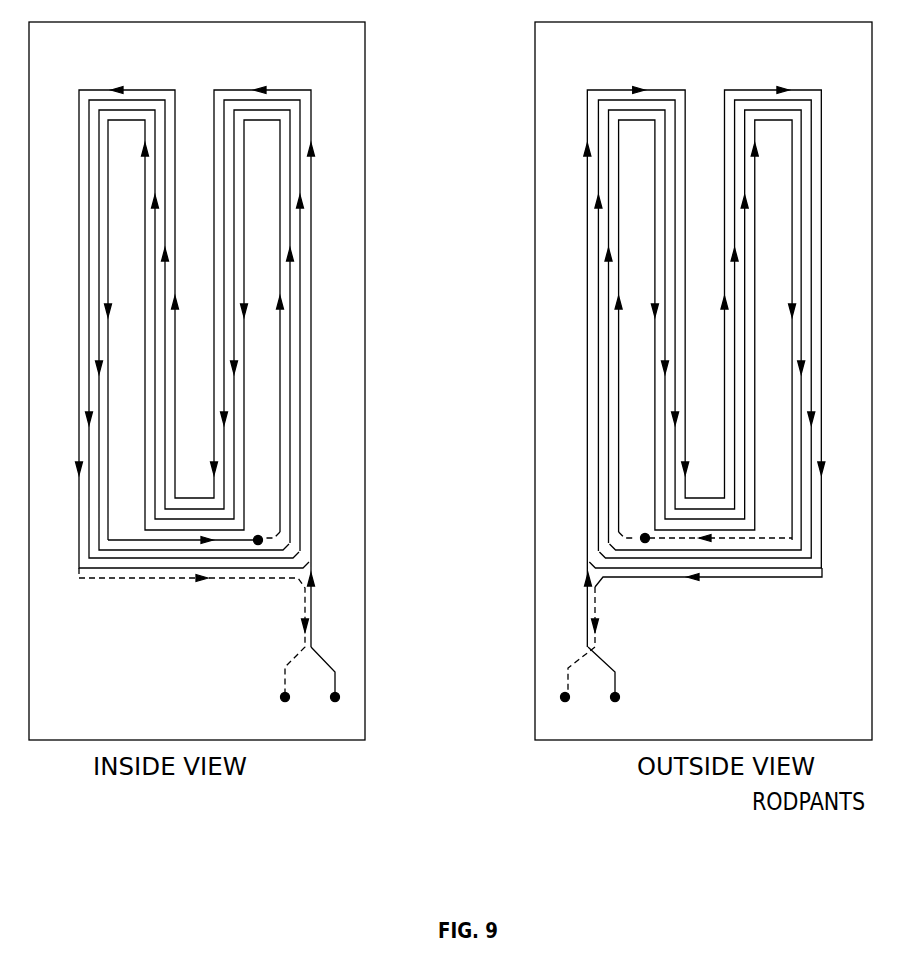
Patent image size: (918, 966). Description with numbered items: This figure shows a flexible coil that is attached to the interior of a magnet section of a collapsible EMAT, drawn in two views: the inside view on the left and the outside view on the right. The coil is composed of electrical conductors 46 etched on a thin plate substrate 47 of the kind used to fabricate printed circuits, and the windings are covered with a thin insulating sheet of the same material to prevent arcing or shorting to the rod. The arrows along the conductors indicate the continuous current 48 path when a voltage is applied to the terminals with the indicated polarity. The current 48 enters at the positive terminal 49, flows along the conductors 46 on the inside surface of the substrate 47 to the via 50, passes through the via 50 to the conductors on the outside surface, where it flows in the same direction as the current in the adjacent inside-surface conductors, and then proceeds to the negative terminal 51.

The electrical conductors 46 is at (584, 396).
The thin plate substrate 47 is at (567, 58).
The current 48 is at (584, 156).
The positive terminal 49 is at (561, 689).
The via 50 is at (639, 533).
The negative terminal 51 is at (611, 703).